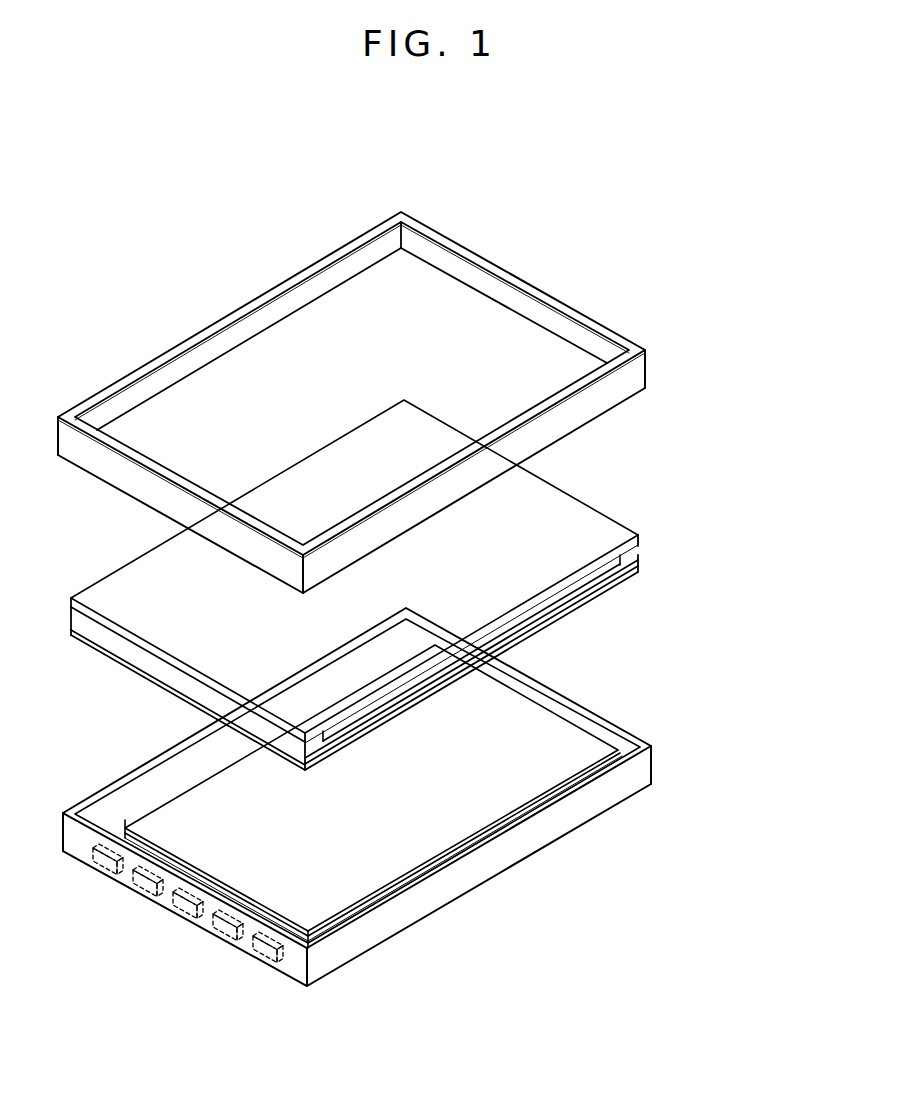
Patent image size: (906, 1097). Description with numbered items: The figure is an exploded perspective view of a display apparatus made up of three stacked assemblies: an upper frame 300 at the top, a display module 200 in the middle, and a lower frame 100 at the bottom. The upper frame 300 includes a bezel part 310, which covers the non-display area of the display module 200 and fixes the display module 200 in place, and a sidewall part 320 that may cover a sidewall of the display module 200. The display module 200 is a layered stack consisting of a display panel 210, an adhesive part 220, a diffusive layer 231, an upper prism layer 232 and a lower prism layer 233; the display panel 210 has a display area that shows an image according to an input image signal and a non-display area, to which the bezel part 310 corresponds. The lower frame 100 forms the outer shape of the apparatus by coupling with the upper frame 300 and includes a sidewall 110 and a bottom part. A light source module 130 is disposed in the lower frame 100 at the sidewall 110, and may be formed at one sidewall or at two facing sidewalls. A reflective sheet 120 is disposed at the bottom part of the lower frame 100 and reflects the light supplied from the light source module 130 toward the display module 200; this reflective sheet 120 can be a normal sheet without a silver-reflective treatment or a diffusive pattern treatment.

The lower frame 100 is at (357, 823).
The sidewall 110 is at (445, 888).
The reflective sheet 120 is at (357, 862).
The light source module 130 is at (302, 962).
The display module 200 is at (433, 585).
The display panel 210 is at (638, 535).
The adhesive part 220 is at (621, 551).
The diffusive layer 231 is at (638, 566).
The upper prism layer 232 is at (632, 571).
The lower prism layer 233 is at (403, 671).
The upper frame 300 is at (426, 402).
The bezel part 310 is at (614, 333).
The sidewall part 320 is at (647, 357).